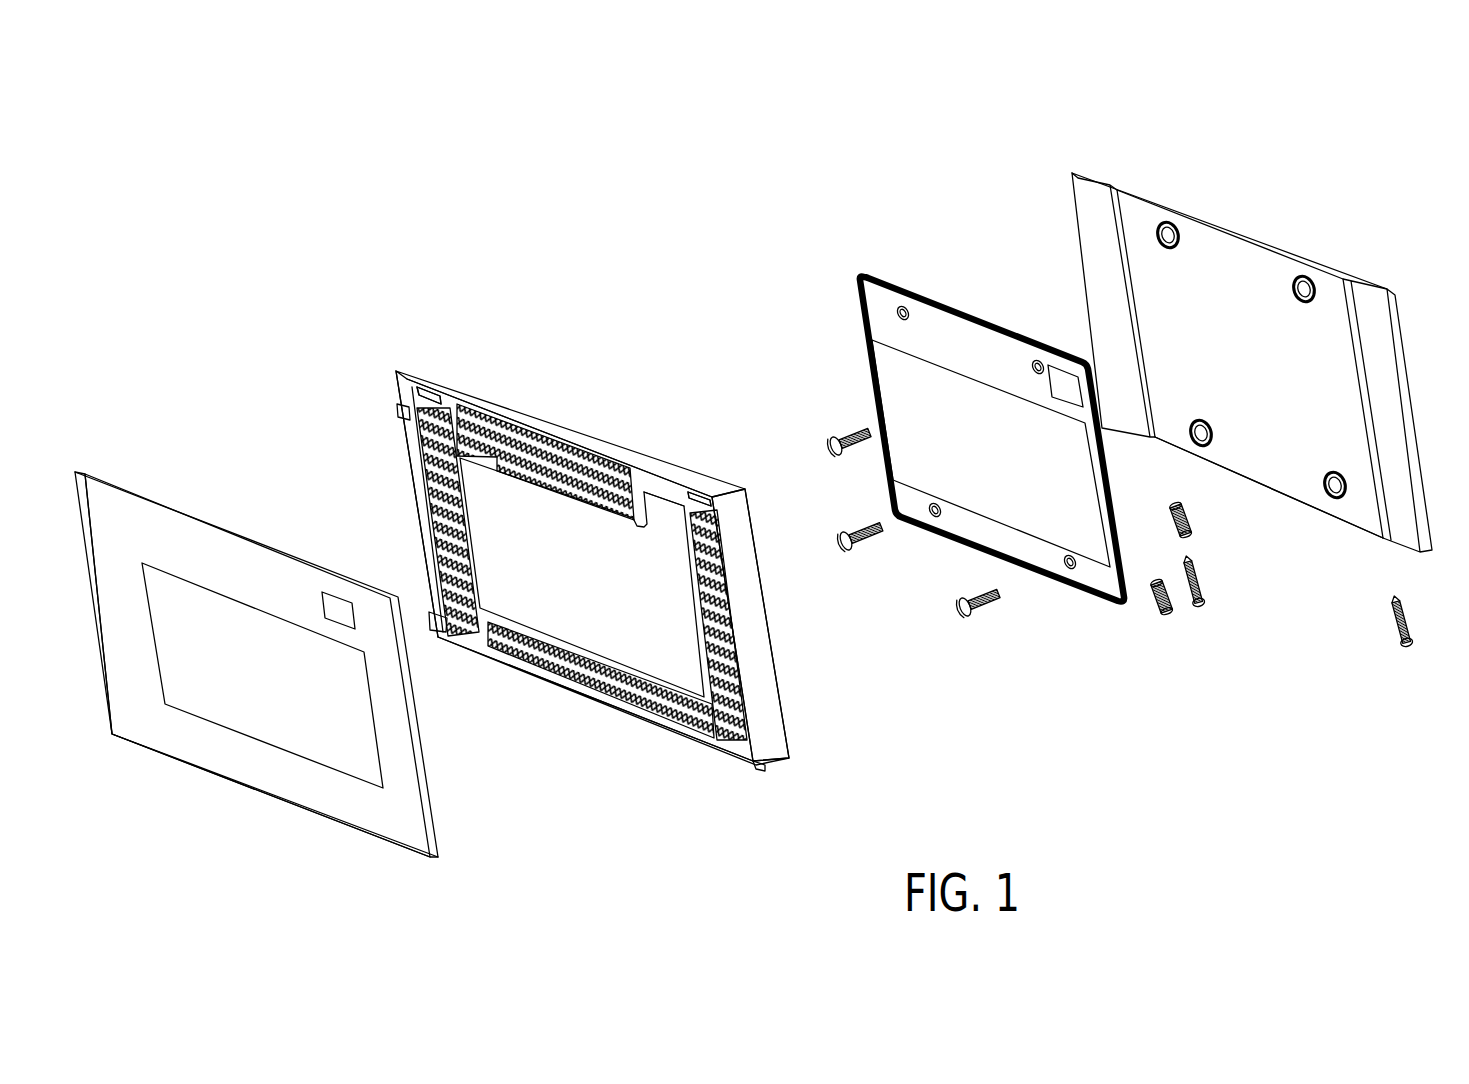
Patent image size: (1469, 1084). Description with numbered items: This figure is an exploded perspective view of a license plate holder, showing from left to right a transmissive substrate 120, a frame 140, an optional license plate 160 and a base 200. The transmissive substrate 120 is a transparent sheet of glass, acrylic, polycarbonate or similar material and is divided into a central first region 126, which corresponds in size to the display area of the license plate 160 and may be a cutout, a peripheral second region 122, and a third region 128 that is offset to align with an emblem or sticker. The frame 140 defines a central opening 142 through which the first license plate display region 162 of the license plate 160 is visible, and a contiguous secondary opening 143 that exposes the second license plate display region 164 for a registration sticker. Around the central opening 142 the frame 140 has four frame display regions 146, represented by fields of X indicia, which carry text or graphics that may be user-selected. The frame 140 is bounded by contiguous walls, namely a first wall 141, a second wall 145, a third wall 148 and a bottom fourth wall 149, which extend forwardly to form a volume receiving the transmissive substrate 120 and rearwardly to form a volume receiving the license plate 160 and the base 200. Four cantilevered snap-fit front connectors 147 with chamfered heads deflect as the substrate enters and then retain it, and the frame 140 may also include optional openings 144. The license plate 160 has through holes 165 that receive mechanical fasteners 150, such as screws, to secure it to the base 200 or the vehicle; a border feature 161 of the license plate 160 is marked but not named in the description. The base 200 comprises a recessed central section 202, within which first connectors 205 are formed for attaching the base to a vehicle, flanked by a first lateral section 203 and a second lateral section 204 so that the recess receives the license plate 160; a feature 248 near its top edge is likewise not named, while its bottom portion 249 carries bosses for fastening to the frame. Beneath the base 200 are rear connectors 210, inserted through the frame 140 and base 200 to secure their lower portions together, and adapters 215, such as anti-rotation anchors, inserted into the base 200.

The transmissive substrate 120 is at (182, 476).
The second region 122 is at (278, 775).
The first region 126 is at (239, 682).
The third region 128 is at (333, 590).
The frame 140 is at (486, 335).
The first wall 141 is at (745, 556).
The central opening 142 is at (556, 575).
The secondary opening 143 is at (661, 510).
The openings 144 is at (428, 386).
The second wall 145 is at (402, 480).
The frame display regions 146 is at (612, 456).
The front connectors 147 is at (392, 404).
The third wall 148 is at (552, 410).
The fourth wall 149 is at (575, 690).
The mechanical fasteners 150 is at (983, 616).
The license plate 160 is at (945, 408).
The gasket rim 161 is at (874, 320).
The first license plate display region 162 is at (965, 457).
The second license plate display region 164 is at (1058, 368).
The through holes 165 is at (900, 306).
The base 200 is at (1236, 354).
The central section 202 is at (1223, 364).
The first lateral section 203 is at (1092, 202).
The second lateral section 204 is at (1398, 352).
The first connectors 205 is at (1166, 222).
The rear connectors 210 is at (1403, 652).
The adapters 215 is at (1160, 616).
The top edge of rear housing 248 is at (1246, 222).
The bottom portion 249 is at (1318, 512).